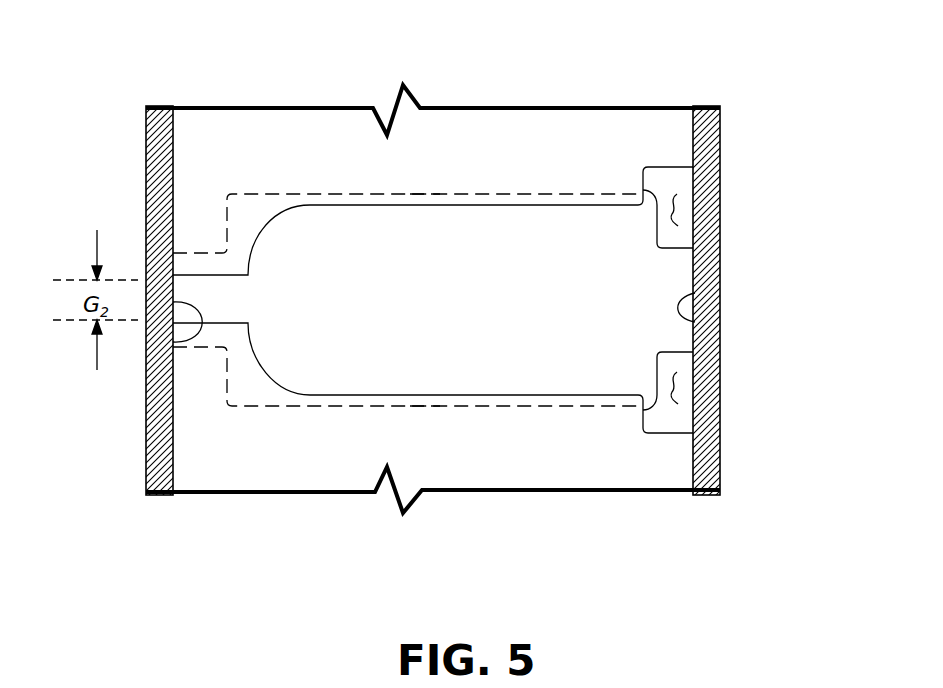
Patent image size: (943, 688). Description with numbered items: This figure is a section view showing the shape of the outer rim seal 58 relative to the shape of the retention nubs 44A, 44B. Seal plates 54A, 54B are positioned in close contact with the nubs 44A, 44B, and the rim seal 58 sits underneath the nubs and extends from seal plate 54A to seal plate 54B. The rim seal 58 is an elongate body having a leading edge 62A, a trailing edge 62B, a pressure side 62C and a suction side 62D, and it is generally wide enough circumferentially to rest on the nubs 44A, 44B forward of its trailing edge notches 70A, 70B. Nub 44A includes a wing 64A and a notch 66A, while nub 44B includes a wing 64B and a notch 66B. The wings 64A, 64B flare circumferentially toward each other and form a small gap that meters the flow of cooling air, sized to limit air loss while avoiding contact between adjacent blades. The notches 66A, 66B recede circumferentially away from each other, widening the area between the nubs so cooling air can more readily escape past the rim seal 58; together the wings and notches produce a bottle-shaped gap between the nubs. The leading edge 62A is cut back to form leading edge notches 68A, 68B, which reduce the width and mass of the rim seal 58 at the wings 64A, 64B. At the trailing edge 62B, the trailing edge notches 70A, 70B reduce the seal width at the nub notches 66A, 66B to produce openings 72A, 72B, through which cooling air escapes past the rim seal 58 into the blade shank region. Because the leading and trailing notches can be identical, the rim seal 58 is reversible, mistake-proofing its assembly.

The seal plate 54A is at (150, 143).
The seal plate 54B is at (702, 140).
The retention nub 44A is at (270, 137).
The retention nub 44B is at (280, 450).
The wing 64A is at (248, 207).
The wing 64B is at (248, 368).
The notch 66A is at (690, 182).
The notch 66B is at (670, 432).
The trailing edge notch 70A is at (685, 250).
The trailing edge notch 70B is at (687, 357).
The opening 72A is at (685, 210).
The opening 72B is at (687, 387).
The leading edge notch 68A is at (213, 233).
The leading edge notch 68B is at (222, 398).
The leading edge 62A is at (200, 338).
The trailing edge 62B is at (700, 294).
The pressure side 62C is at (423, 408).
The suction side 62D is at (423, 194).
The outer rim seal 58 is at (457, 320).